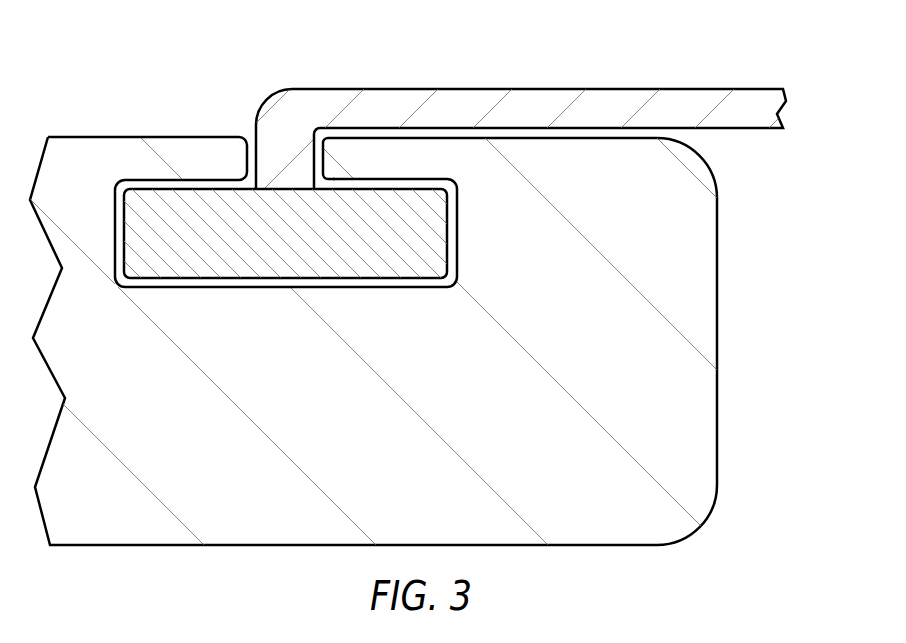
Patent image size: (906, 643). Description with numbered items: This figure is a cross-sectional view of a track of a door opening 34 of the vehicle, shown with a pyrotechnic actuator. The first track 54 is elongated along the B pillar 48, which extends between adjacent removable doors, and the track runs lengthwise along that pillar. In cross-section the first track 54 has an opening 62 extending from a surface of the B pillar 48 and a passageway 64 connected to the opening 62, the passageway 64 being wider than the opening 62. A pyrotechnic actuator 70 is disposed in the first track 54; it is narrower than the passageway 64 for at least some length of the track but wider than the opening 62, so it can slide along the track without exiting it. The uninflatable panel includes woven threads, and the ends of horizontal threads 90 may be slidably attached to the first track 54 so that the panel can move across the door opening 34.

The door opening 34 is at (718, 293).
The B pillar 48 is at (193, 137).
The first track 54 is at (242, 288).
The opening 62 is at (323, 167).
The passageway 64 is at (457, 211).
The pyrotechnic actuator 70 is at (398, 279).
The horizontal thread 90 is at (482, 88).